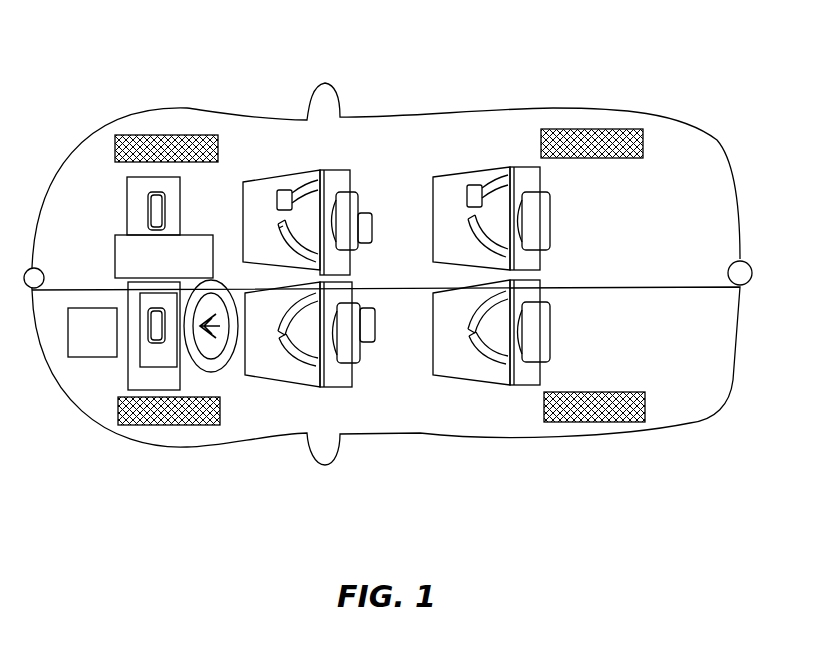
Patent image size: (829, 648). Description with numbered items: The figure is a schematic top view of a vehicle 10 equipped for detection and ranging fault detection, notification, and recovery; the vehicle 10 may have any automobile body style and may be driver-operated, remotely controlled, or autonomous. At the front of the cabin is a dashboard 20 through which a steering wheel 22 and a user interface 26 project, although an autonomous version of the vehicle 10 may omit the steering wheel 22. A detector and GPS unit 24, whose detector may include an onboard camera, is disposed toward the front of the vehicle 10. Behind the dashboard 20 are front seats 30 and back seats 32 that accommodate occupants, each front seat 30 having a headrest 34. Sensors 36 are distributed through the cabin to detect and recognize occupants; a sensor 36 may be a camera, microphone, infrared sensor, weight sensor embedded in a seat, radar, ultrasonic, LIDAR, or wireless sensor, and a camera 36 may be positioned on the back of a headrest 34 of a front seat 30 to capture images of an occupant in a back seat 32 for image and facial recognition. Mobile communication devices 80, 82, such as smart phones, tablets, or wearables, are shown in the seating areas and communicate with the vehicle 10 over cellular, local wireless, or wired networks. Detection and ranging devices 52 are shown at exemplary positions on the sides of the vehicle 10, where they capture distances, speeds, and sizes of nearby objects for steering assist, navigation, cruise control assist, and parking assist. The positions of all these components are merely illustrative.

The vehicle 10 is at (488, 33).
The dashboard 20 is at (180, 192).
The steering wheel 22 is at (216, 371).
The detector and GPS unit 24 is at (104, 345).
The user interface 26 is at (177, 268).
The front seat 30 is at (329, 170).
The back seat 32 is at (541, 177).
The headrest 34 is at (366, 212).
The sensor 36 is at (148, 210).
The detection and ranging device 52 is at (43, 271).
The mobile communication device 80 is at (280, 188).
The mobile communication device 82 is at (470, 184).